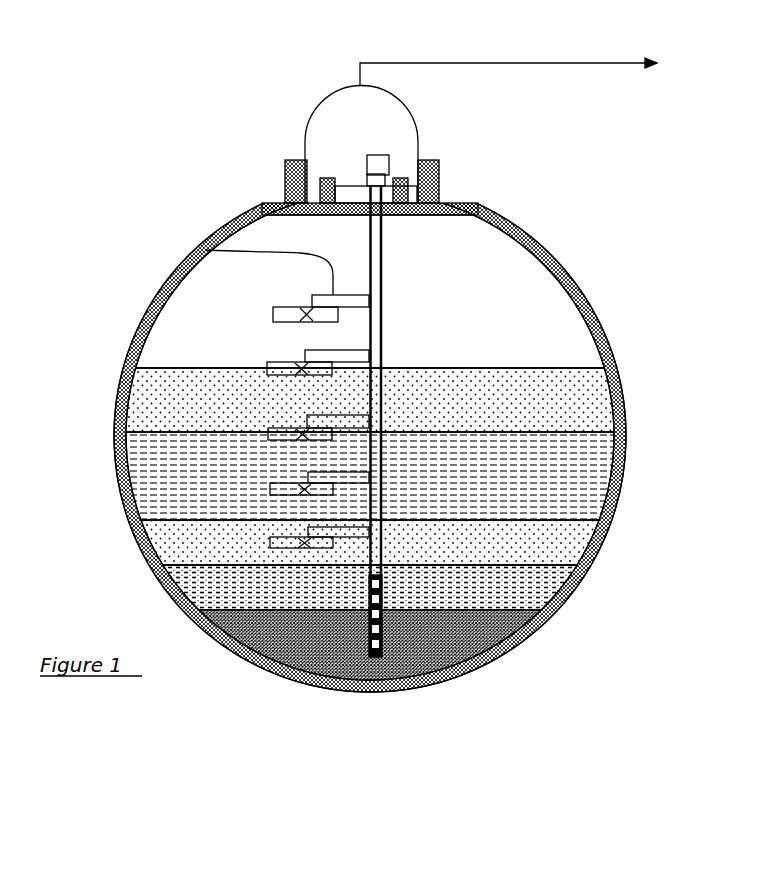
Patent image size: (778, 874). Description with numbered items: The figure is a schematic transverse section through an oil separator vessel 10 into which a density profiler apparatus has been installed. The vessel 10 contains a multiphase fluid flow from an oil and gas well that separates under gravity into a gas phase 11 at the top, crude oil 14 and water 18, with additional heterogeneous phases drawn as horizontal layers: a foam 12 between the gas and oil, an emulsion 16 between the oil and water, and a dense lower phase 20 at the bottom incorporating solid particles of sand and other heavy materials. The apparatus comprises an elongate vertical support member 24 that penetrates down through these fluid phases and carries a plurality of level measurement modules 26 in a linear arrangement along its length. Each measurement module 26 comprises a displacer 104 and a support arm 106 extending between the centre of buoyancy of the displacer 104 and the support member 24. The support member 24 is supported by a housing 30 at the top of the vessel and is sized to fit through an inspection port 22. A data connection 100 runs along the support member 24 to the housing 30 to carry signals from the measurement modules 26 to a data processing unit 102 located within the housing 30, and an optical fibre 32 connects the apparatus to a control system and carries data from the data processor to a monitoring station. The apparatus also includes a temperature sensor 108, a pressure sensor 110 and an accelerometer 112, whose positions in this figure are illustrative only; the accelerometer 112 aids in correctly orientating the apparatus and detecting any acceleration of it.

The vessel 10 is at (118, 505).
The gas phase 11 is at (580, 310).
The foam 12 is at (595, 397).
The crude oil 14 is at (593, 474).
The emulsion 16 is at (597, 547).
The water 18 is at (540, 596).
The dense lower phase 20 is at (520, 650).
The inspection port 22 is at (288, 178).
The vertical support member 24 is at (385, 275).
The level measurement modules 26 is at (284, 300).
The housing 30 is at (390, 130).
The optical fibre 32 is at (580, 68).
The data connection 100 is at (385, 247).
The data processing unit 102 is at (370, 160).
The displacer 104 is at (283, 317).
The support arm 106 is at (205, 250).
The temperature sensor 108 is at (385, 580).
The pressure sensor 110 is at (463, 683).
The accelerometer 112 is at (345, 658).